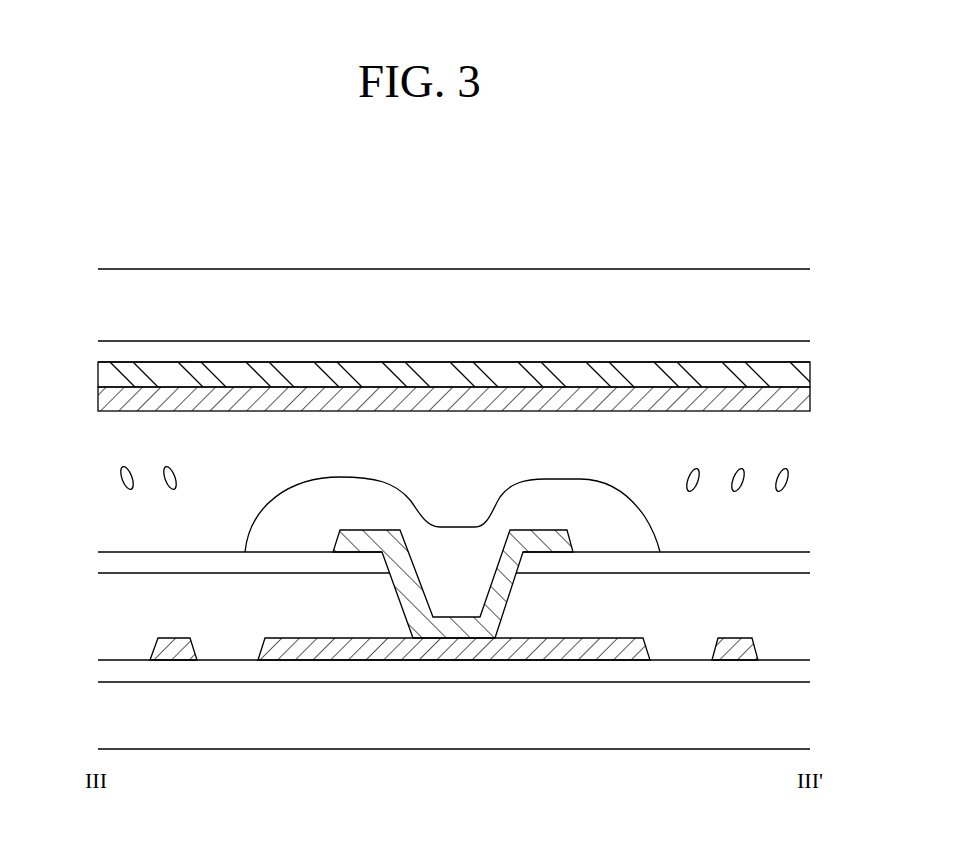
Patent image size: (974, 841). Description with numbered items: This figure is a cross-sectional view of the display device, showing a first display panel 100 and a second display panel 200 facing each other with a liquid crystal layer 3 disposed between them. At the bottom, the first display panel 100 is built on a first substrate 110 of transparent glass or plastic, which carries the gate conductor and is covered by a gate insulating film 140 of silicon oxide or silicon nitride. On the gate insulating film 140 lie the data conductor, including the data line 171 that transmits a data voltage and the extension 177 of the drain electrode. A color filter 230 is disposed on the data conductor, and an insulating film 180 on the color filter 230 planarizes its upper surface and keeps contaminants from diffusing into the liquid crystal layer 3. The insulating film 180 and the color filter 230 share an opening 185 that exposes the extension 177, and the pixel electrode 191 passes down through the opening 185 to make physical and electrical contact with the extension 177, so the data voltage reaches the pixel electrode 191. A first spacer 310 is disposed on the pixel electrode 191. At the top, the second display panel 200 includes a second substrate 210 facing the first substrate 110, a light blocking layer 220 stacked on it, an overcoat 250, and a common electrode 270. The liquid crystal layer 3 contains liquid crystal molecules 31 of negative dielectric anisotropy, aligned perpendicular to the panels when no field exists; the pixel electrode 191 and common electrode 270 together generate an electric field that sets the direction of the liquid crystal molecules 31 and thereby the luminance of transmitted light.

The liquid crystal layer 3 is at (826, 411).
The liquid crystal molecules 31 is at (117, 474).
The first display panel 100 is at (826, 552).
The first substrate 110 is at (228, 725).
The gate insulating film 140 is at (120, 670).
The data line 171 is at (170, 650).
The extension 177 is at (565, 647).
The insulating film 180 is at (120, 563).
The opening 185 is at (402, 593).
The pixel electrode 191 is at (458, 630).
The second display panel 200 is at (826, 269).
The second substrate 210 is at (299, 293).
The light blocking layer 220 is at (467, 352).
The color filter 230 is at (120, 620).
The overcoat 250 is at (533, 375).
The common electrode 270 is at (635, 400).
The first spacer 310 is at (282, 517).